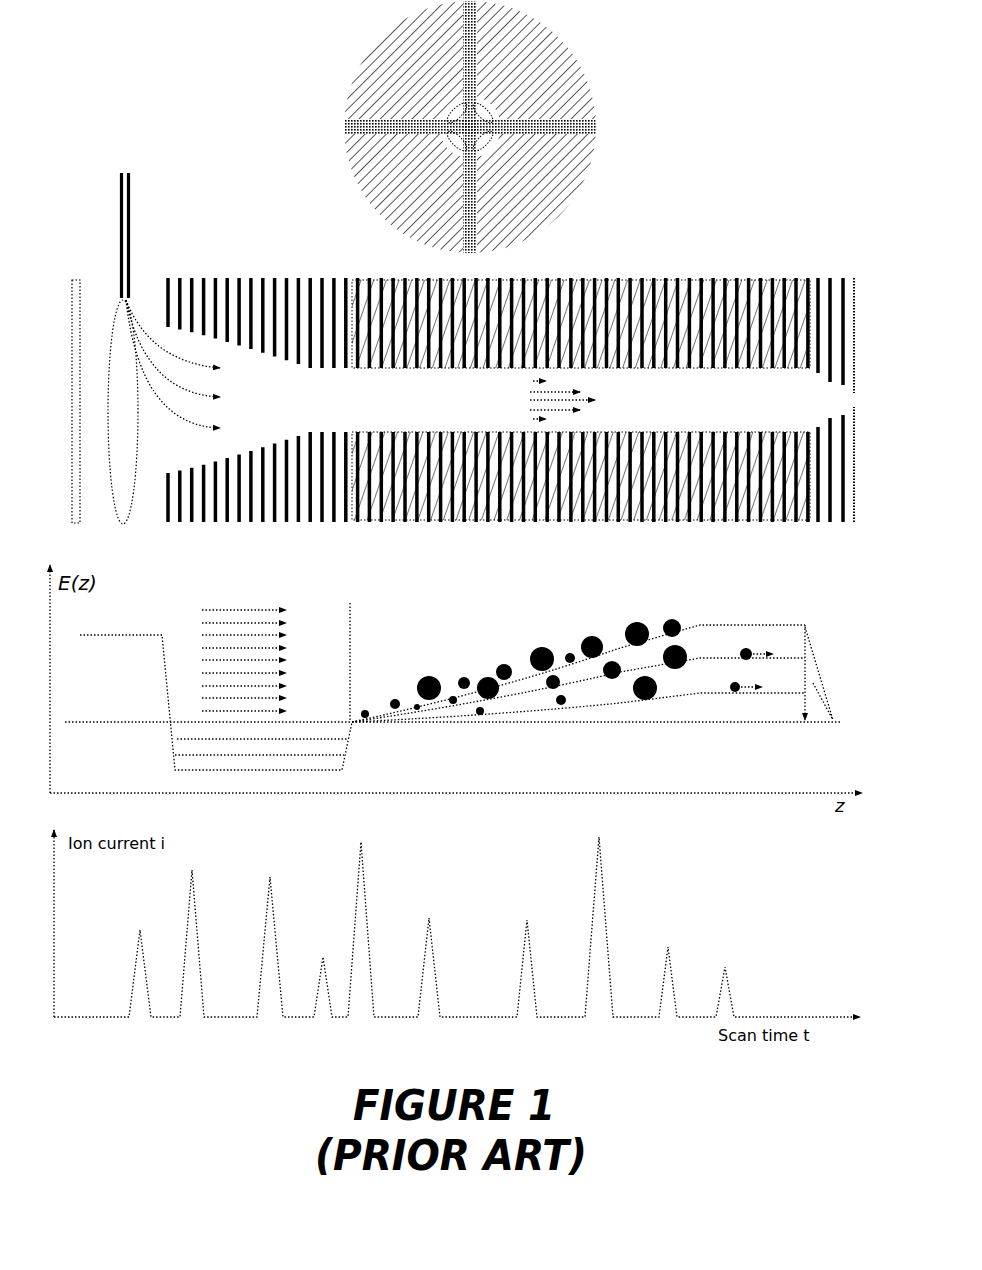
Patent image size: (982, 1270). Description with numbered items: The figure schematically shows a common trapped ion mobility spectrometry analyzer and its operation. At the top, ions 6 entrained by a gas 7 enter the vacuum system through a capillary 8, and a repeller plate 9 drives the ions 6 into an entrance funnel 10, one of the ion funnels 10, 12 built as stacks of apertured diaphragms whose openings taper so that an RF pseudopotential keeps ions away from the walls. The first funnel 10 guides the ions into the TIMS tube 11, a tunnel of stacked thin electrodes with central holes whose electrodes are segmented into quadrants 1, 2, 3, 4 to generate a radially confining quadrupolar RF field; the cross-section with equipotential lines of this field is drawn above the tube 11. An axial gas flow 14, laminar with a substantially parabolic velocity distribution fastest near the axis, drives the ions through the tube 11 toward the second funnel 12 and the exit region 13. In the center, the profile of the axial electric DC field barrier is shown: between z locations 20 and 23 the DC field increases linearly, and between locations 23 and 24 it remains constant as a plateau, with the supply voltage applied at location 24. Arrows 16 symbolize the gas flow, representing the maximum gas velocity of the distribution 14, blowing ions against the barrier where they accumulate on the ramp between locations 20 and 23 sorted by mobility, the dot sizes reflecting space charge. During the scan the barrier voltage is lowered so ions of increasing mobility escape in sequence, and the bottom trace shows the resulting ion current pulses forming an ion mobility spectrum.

The quadrant 1 is at (403, 60).
The quadrant 2 is at (537, 60).
The quadrant 3 is at (403, 194).
The quadrant 4 is at (537, 194).
The ions 6 is at (173, 364).
The gas 7 is at (123, 412).
The capillary 8 is at (136, 235).
The repeller plate 9 is at (76, 389).
The entrance funnel 10 is at (170, 267).
The TIMS tube 11 is at (805, 267).
The ion funnel 12 is at (844, 267).
The exit aperture 13 is at (854, 272).
The axial gas flow 14 is at (549, 400).
The arrows 16 is at (244, 660).
The z location 20 is at (347, 651).
The z location 23 is at (706, 625).
The z location 24 is at (806, 625).